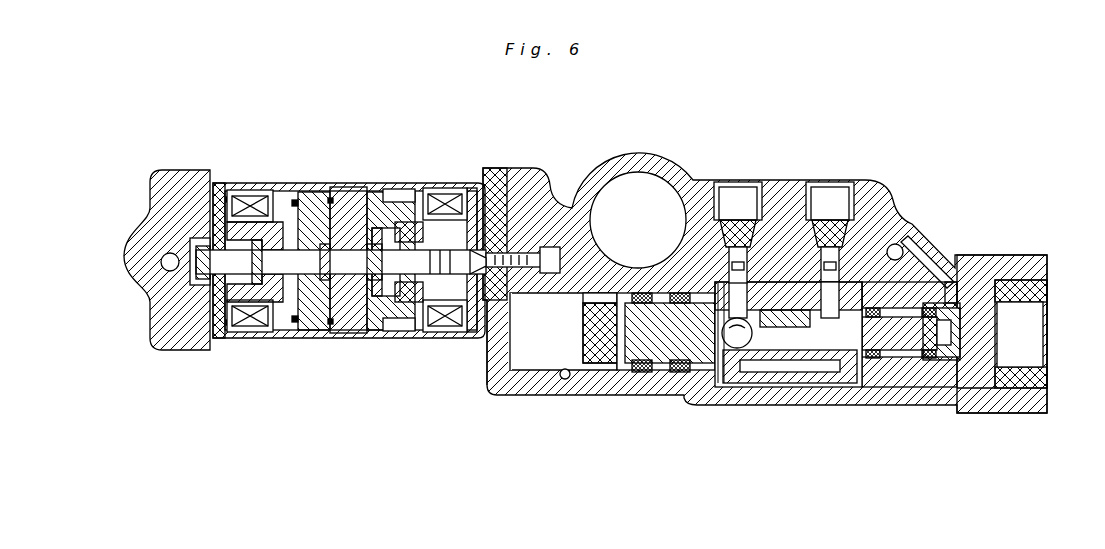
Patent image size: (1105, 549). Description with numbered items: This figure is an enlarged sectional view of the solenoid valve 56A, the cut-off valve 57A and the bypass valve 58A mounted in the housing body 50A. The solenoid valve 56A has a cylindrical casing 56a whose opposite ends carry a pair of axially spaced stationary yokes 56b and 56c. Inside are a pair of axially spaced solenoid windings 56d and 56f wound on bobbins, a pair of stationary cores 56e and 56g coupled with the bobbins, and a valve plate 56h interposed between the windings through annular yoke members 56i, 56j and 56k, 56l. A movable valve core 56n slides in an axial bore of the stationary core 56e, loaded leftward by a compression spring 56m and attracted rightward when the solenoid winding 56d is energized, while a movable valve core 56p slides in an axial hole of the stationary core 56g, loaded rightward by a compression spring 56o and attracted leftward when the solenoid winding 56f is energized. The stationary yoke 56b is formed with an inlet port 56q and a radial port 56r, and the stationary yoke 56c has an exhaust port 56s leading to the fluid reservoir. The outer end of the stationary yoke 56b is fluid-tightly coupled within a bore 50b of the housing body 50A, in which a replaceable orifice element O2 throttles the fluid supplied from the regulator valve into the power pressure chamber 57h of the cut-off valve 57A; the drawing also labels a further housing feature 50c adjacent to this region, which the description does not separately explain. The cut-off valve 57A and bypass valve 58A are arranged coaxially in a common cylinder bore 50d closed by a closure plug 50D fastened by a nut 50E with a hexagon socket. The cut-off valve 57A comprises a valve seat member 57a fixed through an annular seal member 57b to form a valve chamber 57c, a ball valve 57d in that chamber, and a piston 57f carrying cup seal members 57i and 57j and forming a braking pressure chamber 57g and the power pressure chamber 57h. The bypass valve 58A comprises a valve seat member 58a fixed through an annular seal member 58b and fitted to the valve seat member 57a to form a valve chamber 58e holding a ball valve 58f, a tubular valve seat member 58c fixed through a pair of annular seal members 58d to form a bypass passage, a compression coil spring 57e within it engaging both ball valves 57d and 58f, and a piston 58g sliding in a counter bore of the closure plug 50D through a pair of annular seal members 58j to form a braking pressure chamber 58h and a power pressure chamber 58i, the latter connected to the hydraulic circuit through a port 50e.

The housing body 50A is at (856, 228).
The orifice element O2 is at (545, 237).
The bore 50b is at (561, 280).
The chamber wall 50c is at (505, 314).
The cylinder bore 50d is at (565, 380).
The port 50e is at (913, 250).
The closure plug 50D is at (977, 372).
The nut 50E is at (1040, 384).
The solenoid valve 56A is at (392, 156).
The cylindrical casing 56a is at (338, 183).
The stationary yoke 56b is at (462, 200).
The stationary yoke 56c is at (228, 186).
The solenoid winding 56d is at (428, 190).
The stationary core 56e is at (410, 200).
The solenoid winding 56f is at (265, 193).
The stationary core 56g is at (292, 200).
The valve plate 56h is at (345, 318).
The annular yoke member 56i is at (378, 324).
The annular yoke member 56j is at (401, 318).
The annular yoke member 56k is at (313, 336).
The annular yoke member 56l is at (292, 318).
The compression spring 56m is at (504, 338).
The movable valve core 56n is at (450, 275).
The compression spring 56o is at (318, 190).
The movable valve core 56p is at (281, 268).
The inlet port 56q is at (535, 245).
The radial port 56r is at (490, 192).
The exhaust port 56s is at (177, 274).
The cut-off valve 57A is at (703, 258).
The valve seat member 57a is at (750, 385).
The annular seal member 57b is at (762, 258).
The valve chamber 57c is at (772, 378).
The ball valve 57d is at (692, 395).
The compression coil spring 57e is at (795, 380).
The piston 57f is at (595, 363).
The braking pressure chamber 57g is at (722, 380).
The power pressure chamber 57h is at (546, 370).
The annular cup seal member 57i is at (672, 372).
The annular cup seal member 57j is at (642, 372).
The bypass valve 58A is at (880, 230).
The valve seat member 58a is at (862, 392).
The annular seal member 58b is at (798, 258).
The tubular valve seat member 58c is at (840, 382).
The annular seal member 58d is at (813, 376).
The valve chamber 58e is at (858, 378).
The ball valve 58f is at (872, 327).
The piston 58g is at (940, 337).
The braking pressure chamber 58h is at (892, 380).
The power pressure chamber 58i is at (958, 321).
The annular seal member 58j is at (953, 282).